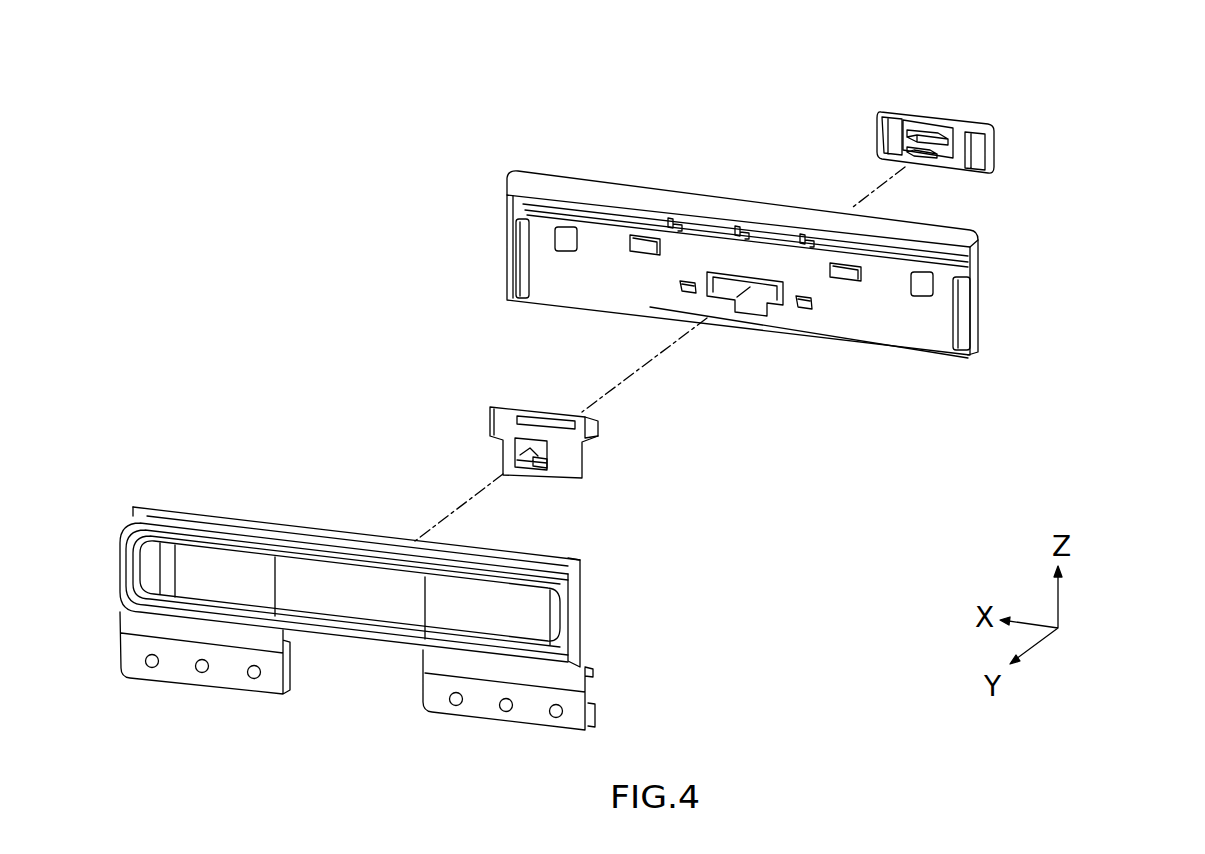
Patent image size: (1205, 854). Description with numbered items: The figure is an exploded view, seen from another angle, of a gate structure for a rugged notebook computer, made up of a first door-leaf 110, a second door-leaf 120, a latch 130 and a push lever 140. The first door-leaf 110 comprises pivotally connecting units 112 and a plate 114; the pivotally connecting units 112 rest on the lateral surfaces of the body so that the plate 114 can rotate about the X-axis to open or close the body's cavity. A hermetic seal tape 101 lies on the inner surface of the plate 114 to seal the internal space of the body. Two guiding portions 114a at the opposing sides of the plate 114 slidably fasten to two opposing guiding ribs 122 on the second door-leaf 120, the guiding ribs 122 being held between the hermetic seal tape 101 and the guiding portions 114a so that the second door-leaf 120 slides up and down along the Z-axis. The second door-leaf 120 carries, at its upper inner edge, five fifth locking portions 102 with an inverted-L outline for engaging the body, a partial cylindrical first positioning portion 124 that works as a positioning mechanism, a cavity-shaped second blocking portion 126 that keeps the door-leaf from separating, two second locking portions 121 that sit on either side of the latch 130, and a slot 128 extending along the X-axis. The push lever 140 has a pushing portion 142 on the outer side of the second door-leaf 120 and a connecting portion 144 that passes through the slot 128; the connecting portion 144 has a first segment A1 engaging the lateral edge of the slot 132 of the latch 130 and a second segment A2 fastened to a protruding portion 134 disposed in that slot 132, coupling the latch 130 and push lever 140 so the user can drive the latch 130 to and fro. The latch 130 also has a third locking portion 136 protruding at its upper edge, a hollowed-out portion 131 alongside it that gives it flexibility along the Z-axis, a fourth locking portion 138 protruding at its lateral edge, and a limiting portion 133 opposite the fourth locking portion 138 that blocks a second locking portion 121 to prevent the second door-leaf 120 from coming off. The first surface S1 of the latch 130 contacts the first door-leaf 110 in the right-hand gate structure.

The hermetic seal tape 101 is at (122, 567).
The fifth locking portion 102 is at (506, 187).
The first door-leaf 110 is at (371, 614).
The pivotally connecting units 112 is at (180, 672).
The plate 114 is at (262, 518).
The guiding portions 114a is at (129, 511).
The second door-leaf 120 is at (979, 290).
The second locking portions 121 is at (803, 296).
The guiding ribs 122 is at (522, 259).
The first positioning portion 124 is at (648, 236).
The second blocking portion 126 is at (578, 246).
The slot 128 is at (747, 309).
The latch 130 is at (574, 435).
The hollowed-out portion 131 is at (513, 413).
The slot 132 is at (506, 452).
The limiting portion 133 is at (593, 428).
The protruding portion 134 is at (530, 470).
The third locking portion 136 is at (550, 410).
The fourth locking portion 138 is at (490, 435).
The push lever 140 is at (1033, 100).
The pushing portion 142 is at (997, 148).
The connecting portion 144 is at (937, 91).
The first segment A1 is at (953, 148).
The second segment A2 is at (925, 130).
The first surface S1 is at (572, 466).